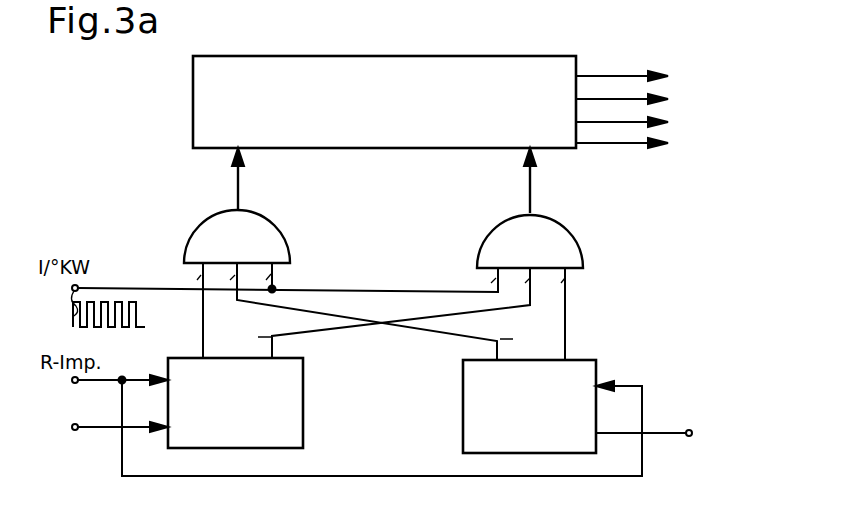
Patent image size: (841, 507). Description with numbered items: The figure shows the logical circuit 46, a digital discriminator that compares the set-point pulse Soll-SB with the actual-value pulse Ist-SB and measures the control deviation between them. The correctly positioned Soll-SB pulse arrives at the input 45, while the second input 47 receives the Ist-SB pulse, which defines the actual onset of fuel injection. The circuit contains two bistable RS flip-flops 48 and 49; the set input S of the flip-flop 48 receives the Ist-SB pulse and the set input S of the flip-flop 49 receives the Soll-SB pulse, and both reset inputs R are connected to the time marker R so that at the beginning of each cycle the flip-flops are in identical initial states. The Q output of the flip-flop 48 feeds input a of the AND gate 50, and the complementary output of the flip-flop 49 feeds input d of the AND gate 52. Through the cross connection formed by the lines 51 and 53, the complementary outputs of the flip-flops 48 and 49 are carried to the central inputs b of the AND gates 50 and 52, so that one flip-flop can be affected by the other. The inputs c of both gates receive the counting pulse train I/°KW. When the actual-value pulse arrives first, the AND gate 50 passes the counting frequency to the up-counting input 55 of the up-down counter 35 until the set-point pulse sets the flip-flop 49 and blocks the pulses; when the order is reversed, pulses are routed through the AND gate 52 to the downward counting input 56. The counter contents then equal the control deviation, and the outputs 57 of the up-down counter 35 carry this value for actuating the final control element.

The up-down counter 35 is at (233, 110).
The input for Soll-SB pulse 45 is at (688, 437).
The logical circuit 46 is at (389, 352).
The second input for Ist-SB pulse 47 is at (74, 431).
The bistable flip-flop 48 is at (288, 433).
The bistable flip-flop 49 is at (478, 432).
The AND gate 50 is at (212, 236).
The line 51 is at (486, 311).
The AND gate 52 is at (556, 243).
The line 53 is at (278, 308).
The up-counting input 55 is at (241, 152).
The downward counting input 56 is at (527, 152).
The outputs 57 is at (593, 108).